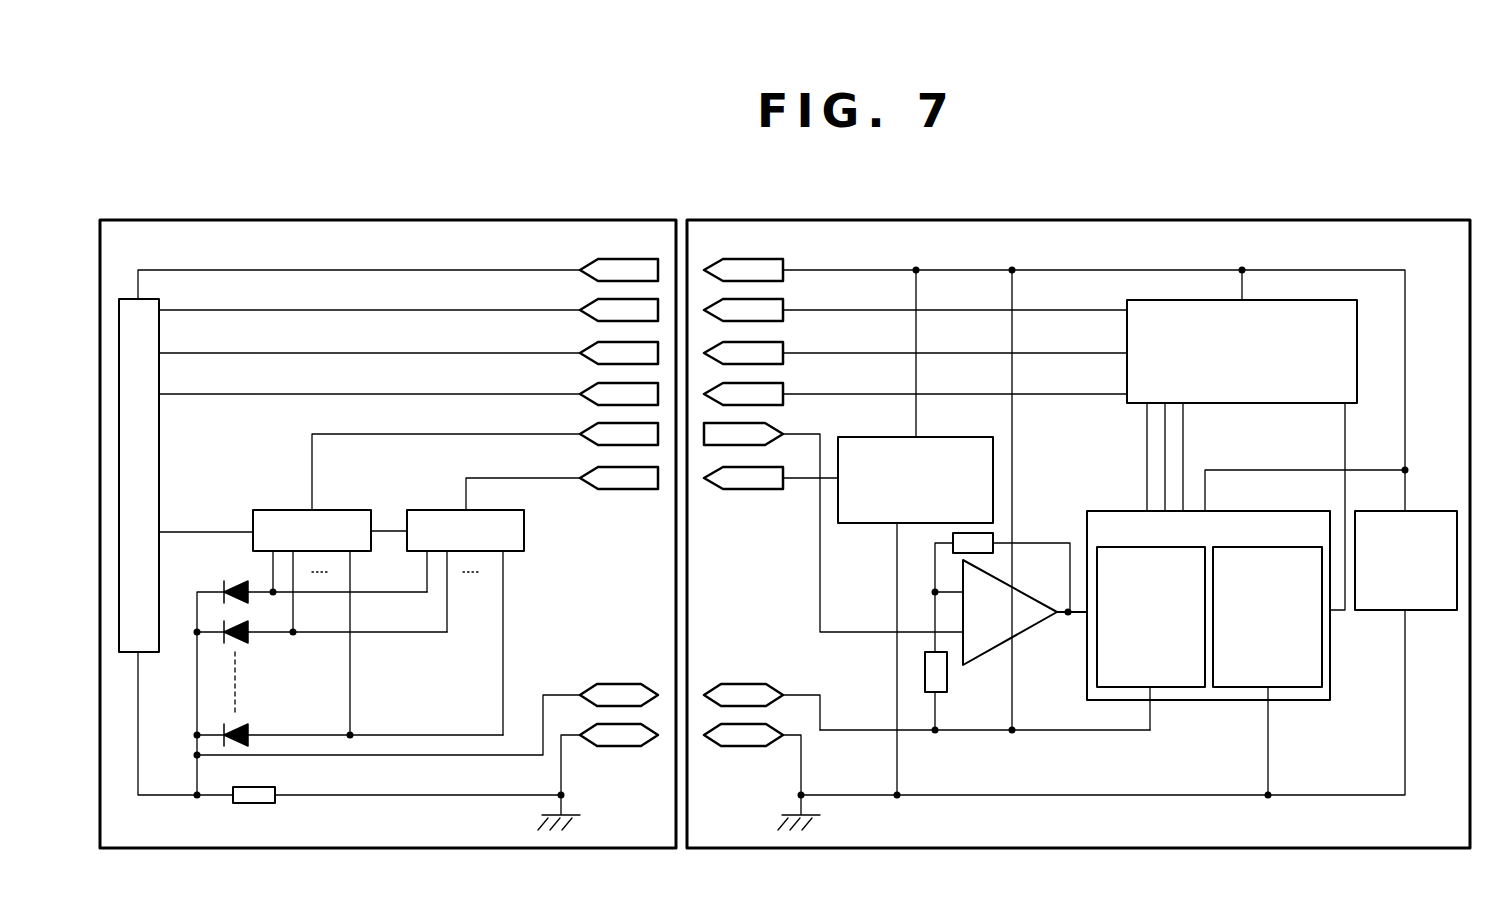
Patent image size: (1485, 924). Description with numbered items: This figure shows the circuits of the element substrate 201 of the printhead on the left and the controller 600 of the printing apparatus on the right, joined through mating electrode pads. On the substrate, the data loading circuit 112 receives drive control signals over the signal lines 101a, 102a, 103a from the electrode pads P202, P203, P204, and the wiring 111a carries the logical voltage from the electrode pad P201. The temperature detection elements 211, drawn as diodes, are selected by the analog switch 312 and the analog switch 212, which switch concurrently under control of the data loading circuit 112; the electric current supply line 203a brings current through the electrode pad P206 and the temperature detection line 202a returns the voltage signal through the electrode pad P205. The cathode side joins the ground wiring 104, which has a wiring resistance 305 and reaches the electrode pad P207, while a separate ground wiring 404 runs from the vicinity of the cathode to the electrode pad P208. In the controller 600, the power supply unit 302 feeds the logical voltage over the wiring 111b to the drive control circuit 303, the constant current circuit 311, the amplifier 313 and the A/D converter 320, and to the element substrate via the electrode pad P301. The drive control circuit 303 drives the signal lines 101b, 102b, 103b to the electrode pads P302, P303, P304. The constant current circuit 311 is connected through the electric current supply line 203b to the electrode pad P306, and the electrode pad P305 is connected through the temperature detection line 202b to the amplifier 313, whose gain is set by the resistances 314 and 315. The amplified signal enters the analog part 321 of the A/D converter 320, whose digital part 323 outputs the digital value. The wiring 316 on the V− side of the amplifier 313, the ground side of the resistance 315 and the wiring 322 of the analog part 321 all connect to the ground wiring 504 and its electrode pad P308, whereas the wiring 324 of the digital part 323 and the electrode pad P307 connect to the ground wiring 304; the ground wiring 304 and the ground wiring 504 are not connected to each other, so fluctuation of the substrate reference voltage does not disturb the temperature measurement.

The element substrate 201 is at (650, 218).
The controller 600 is at (1422, 218).
The data loading circuit 112 is at (130, 297).
The wiring 111a is at (283, 270).
The signal line 101a is at (283, 310).
The signal line 102a is at (283, 353).
The signal line 103a is at (283, 394).
The electrode pad P201 is at (580, 267).
The electrode pad P202 is at (580, 307).
The electrode pad P203 is at (580, 350).
The electrode pad P204 is at (580, 391).
The electrode pad P205 is at (580, 431).
The electrode pad P206 is at (580, 475).
The electrode pad P207 is at (625, 748).
The electrode pad (second pad) P208 is at (625, 683).
The temperature detection line 202a is at (310, 451).
The electric current supply line 203a is at (464, 489).
The analog switch 312 is at (253, 516).
The analog switch 212 is at (524, 530).
The temperature detection element 211 is at (282, 713).
The wiring resistance 305 is at (249, 805).
The ground wiring (second wiring) 404 is at (552, 691).
The ground wiring 104 is at (561, 778).
The electrode pad P301 is at (786, 268).
The electrode pad P302 is at (786, 308).
The electrode pad P303 is at (786, 351).
The electrode pad P304 is at (786, 392).
The electrode pad (eighth pad) P305 is at (786, 432).
The electrode pad (seventh pad) P306 is at (722, 490).
The electrode pad (sixth pad) P307 is at (730, 748).
The electrode pad (fifth pad) P308 is at (731, 683).
The wiring 111b is at (1025, 270).
The signal line 101b is at (1025, 310).
The signal line 102b is at (1025, 353).
The signal line 103b is at (1025, 394).
The constant current circuit 311 is at (925, 436).
The electric current supply line 203b is at (793, 482).
The temperature detection line 202b is at (863, 630).
The resistance 314 is at (995, 538).
The amplifier (operational amplifier) 313 is at (1030, 636).
The resistance 315 is at (947, 680).
The wiring 316 is at (1013, 718).
The ground wiring (fourth wiring) 304 is at (803, 775).
The ground wiring (third wiring) 504 is at (788, 690).
The wiring 322 is at (1130, 733).
The drive control circuit 303 is at (1135, 405).
The A/D converter (ADC) 320 is at (1248, 512).
The analog part 321 is at (1180, 690).
The digital part 323 is at (1330, 665).
The wiring 324 is at (1270, 735).
The power supply unit 302 is at (1430, 612).